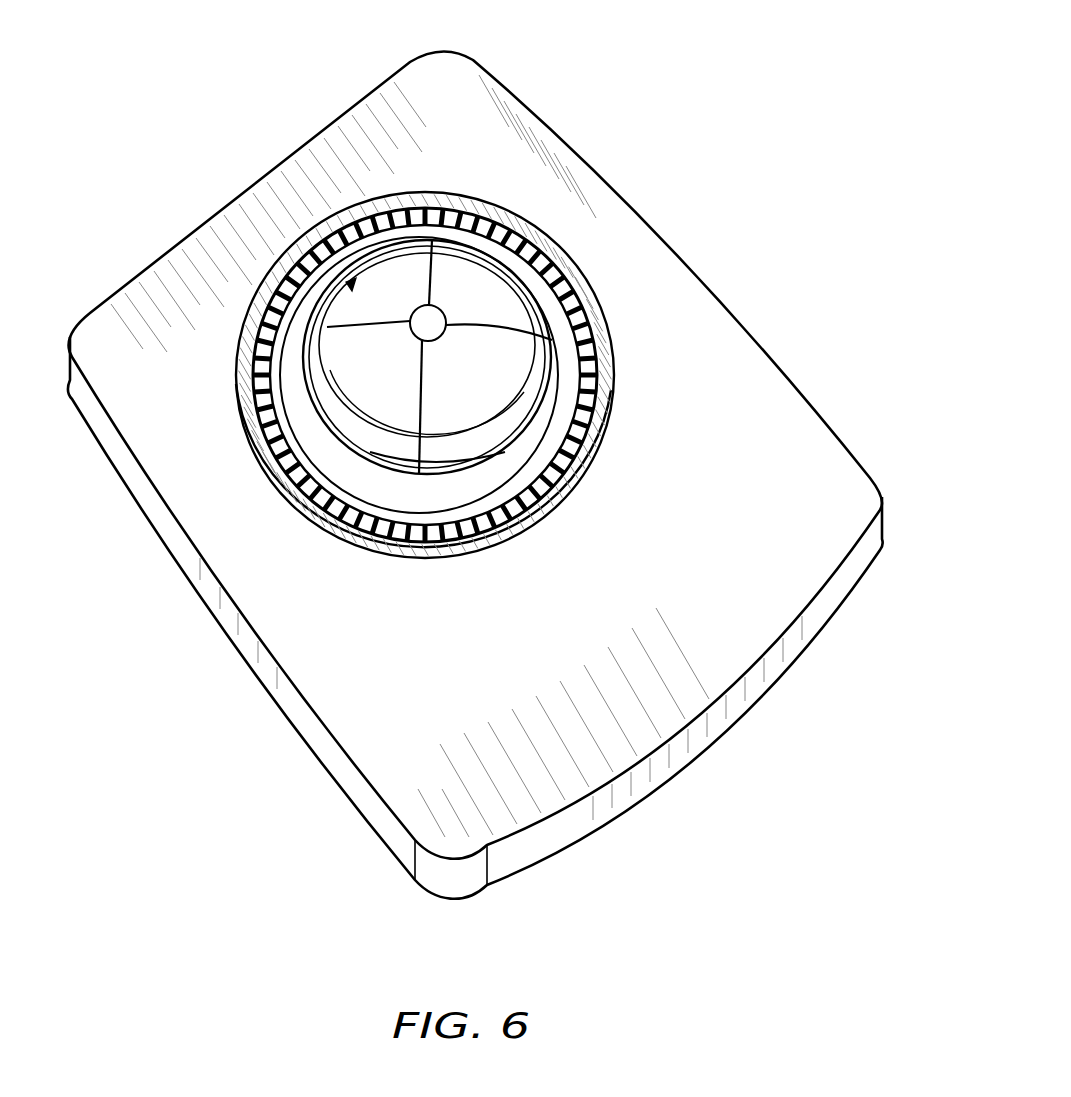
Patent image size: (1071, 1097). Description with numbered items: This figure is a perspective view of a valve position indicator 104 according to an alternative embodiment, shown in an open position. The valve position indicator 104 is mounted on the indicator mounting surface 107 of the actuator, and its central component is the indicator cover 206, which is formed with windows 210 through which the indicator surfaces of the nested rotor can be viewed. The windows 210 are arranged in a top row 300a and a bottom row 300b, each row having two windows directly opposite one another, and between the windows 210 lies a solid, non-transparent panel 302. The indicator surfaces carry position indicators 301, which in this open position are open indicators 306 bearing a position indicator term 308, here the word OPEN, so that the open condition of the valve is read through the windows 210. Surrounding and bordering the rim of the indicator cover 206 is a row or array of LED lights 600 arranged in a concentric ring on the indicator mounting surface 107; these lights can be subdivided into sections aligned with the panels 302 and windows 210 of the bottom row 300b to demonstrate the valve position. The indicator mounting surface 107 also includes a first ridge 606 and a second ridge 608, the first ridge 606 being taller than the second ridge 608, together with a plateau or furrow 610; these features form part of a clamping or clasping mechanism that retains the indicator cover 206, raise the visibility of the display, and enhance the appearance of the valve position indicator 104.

The valve position indicator 104 is at (668, 92).
The indicator mounting surface 107 is at (128, 284).
The indicator cover 206 is at (458, 240).
The window 210 is at (493, 342).
The position indicator 301 is at (360, 255).
The panel 302 is at (513, 290).
The open indicator 306 is at (393, 250).
The position indicator term 308 is at (346, 283).
The top row 300a is at (420, 430).
The bottom row 300b is at (418, 466).
The LED lights 600 is at (418, 472).
The first ridge 606 is at (552, 332).
The second ridge 608 is at (597, 352).
The plateau/furrow 610 is at (620, 383).